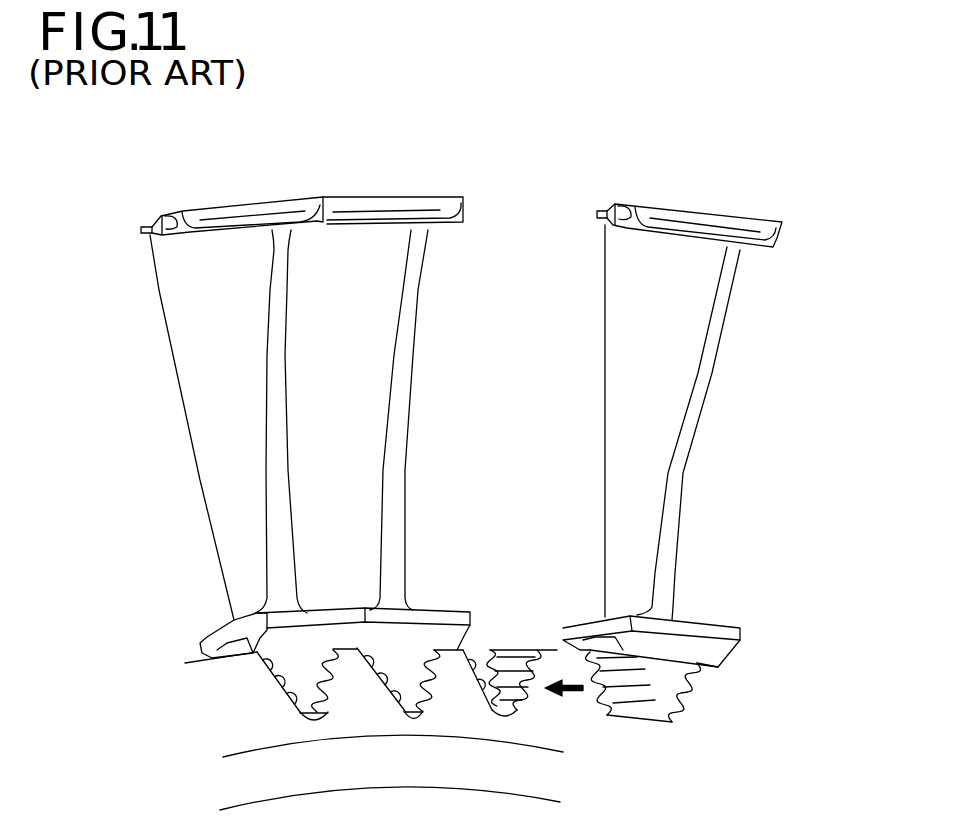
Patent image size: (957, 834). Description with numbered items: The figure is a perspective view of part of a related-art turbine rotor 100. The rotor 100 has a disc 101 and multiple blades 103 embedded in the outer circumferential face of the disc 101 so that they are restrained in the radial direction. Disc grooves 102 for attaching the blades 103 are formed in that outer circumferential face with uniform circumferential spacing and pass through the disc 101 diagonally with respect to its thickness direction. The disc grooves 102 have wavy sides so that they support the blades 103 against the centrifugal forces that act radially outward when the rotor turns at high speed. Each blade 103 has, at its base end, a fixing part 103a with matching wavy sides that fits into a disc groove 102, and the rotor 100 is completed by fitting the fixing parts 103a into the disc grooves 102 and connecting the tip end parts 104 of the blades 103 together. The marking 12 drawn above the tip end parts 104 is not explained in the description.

The turbine rotor 100 is at (138, 392).
The gap between adjacent shrouds 12 is at (373, 187).
The disc 101 is at (226, 726).
The disc groove 102 is at (518, 660).
The blade 103 is at (204, 501).
The fixing part 103a is at (678, 673).
The tip end part 104 is at (263, 206).